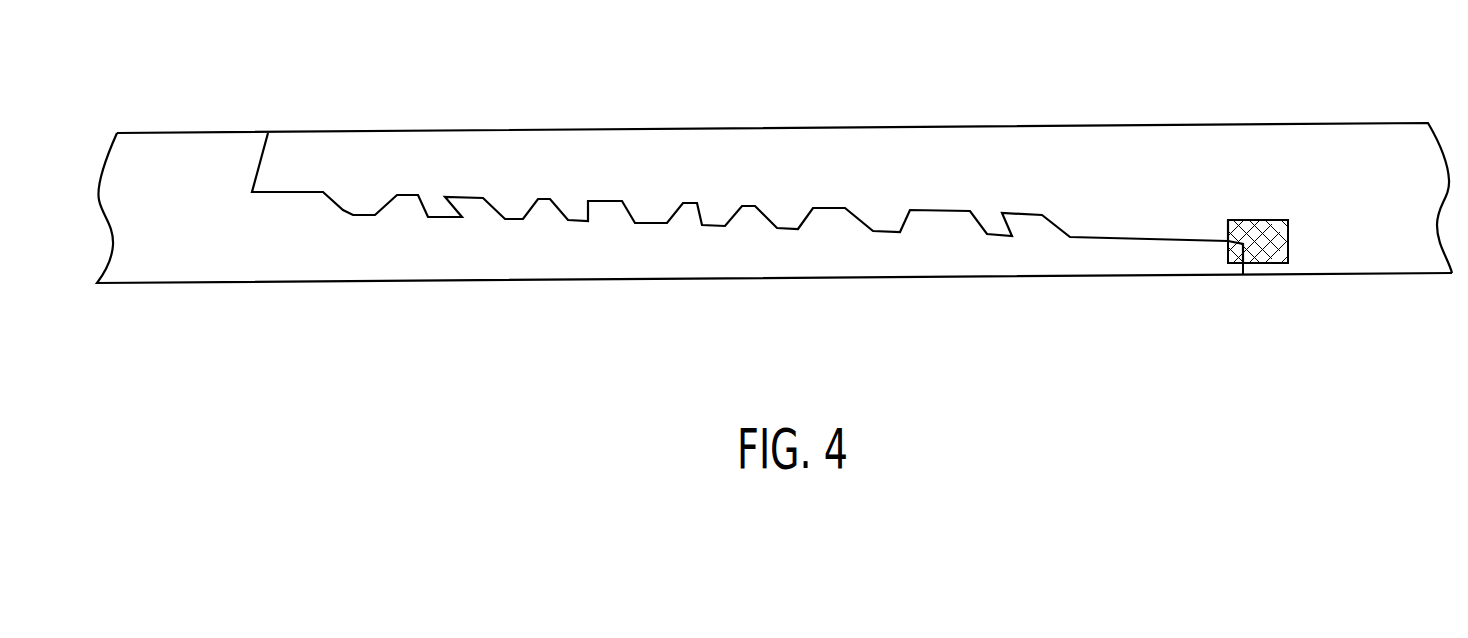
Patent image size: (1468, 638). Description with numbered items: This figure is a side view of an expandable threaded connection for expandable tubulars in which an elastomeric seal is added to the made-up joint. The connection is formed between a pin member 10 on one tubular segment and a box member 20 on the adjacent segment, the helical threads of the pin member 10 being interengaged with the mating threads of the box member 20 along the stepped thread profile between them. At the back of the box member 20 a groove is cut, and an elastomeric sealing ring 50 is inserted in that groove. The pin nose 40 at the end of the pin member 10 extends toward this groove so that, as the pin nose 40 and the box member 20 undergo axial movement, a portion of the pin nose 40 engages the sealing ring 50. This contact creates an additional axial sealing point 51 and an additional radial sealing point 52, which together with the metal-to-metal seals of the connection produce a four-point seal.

The pin member 10 is at (405, 263).
The box member 20 is at (1346, 150).
The pin nose 40 is at (1243, 244).
The elastomeric sealing ring 50 is at (1262, 263).
The axial sealing point 51 is at (1245, 263).
The radial sealing point 52 is at (1228, 230).